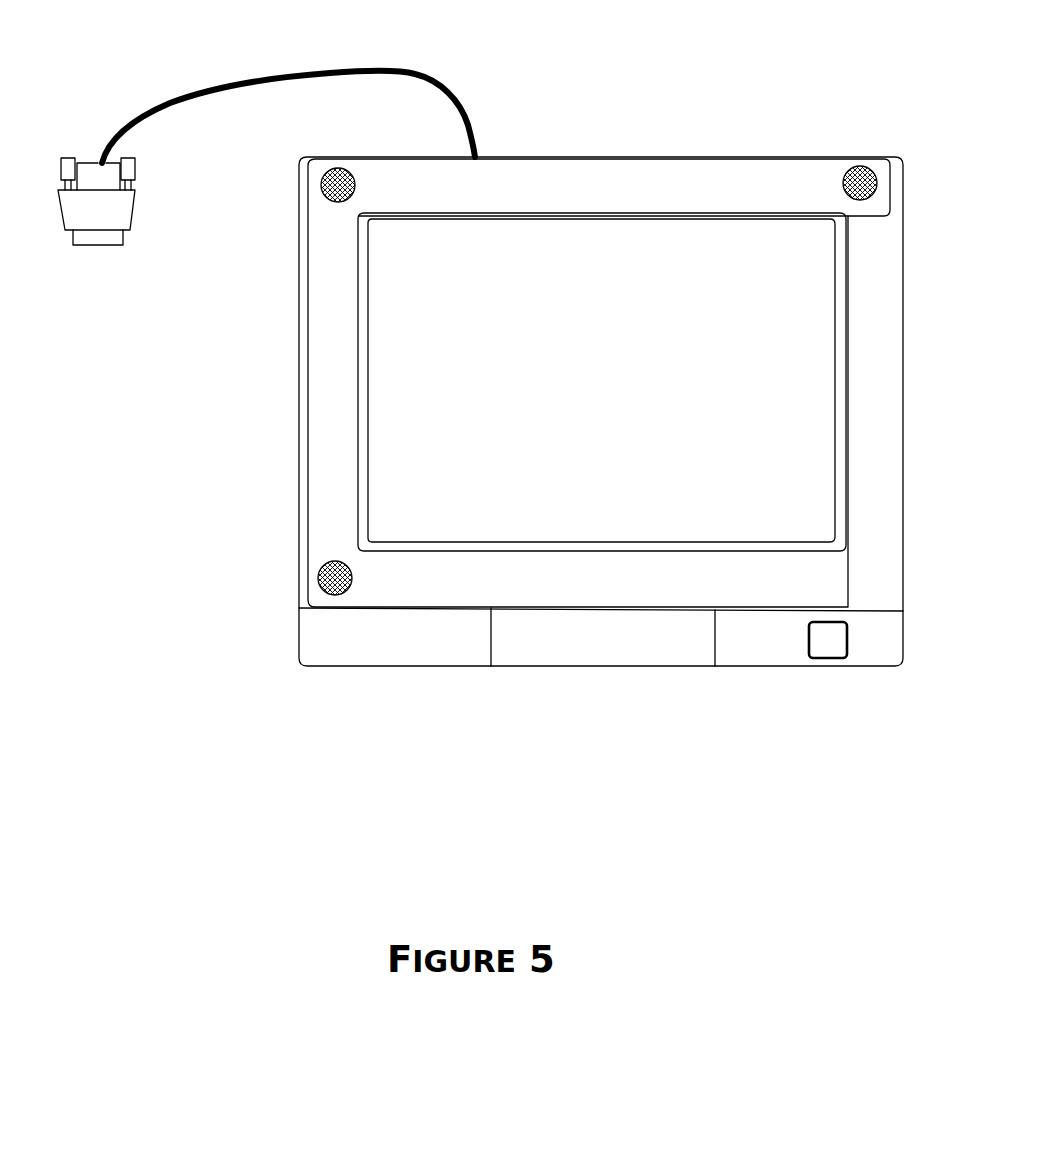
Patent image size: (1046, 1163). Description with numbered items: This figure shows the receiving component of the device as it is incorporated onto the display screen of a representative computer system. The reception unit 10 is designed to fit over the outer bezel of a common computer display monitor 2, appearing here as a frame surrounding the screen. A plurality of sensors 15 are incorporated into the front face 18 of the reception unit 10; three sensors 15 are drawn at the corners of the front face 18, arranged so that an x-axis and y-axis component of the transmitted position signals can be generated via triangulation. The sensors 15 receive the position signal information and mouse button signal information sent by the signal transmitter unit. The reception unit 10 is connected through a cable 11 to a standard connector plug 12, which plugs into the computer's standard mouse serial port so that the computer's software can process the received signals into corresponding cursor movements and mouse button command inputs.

The computer display monitor 2 is at (868, 527).
The reception unit 10 is at (613, 159).
The cable 11 is at (231, 83).
The standard connector plug 12 is at (105, 204).
The sensors 15 is at (334, 186).
The front face 18 is at (328, 375).